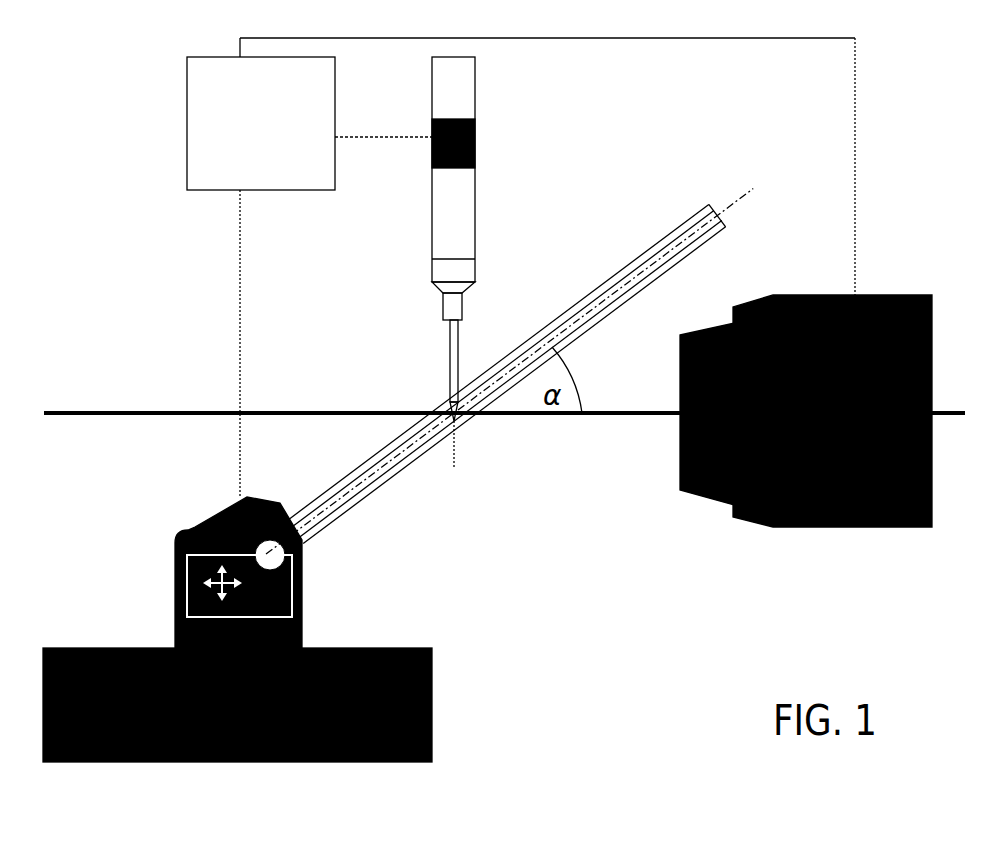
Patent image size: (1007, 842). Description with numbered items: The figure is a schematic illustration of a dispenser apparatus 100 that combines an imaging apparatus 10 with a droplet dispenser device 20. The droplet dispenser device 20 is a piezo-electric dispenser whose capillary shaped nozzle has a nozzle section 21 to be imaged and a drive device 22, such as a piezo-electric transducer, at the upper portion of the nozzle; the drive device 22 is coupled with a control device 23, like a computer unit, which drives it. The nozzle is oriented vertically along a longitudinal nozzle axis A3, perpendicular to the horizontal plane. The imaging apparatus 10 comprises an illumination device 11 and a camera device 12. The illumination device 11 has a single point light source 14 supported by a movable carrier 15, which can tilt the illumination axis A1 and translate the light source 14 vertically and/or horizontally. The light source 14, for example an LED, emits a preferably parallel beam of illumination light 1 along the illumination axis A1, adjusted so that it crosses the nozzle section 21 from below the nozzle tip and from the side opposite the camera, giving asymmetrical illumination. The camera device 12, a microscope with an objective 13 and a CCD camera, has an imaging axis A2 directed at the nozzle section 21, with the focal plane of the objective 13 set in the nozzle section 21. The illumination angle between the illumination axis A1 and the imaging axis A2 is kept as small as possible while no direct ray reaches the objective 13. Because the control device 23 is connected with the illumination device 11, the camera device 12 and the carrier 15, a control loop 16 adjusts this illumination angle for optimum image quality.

The dispenser apparatus 100 is at (152, 60).
The control device 23 is at (197, 145).
The control loop 16 is at (623, 78).
The droplet dispenser device 20 is at (392, 98).
The drive device 22 is at (449, 170).
The nozzle section 21 is at (453, 380).
The imaging apparatus 10 is at (555, 515).
The illumination device 11 is at (147, 763).
The camera device 12 is at (828, 527).
The objective 13 is at (711, 499).
The light source 14 is at (303, 572).
The carrier 15 is at (263, 597).
The illumination light 1 is at (353, 502).
The illumination axis A1 is at (509, 356).
The imaging axis A2 is at (136, 395).
The nozzle axis A3 is at (480, 465).